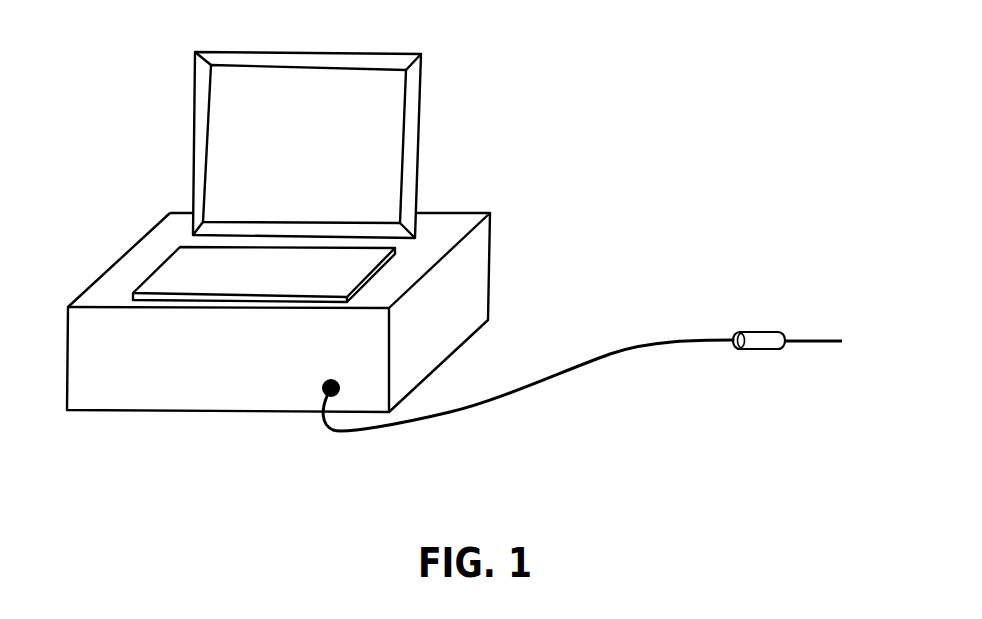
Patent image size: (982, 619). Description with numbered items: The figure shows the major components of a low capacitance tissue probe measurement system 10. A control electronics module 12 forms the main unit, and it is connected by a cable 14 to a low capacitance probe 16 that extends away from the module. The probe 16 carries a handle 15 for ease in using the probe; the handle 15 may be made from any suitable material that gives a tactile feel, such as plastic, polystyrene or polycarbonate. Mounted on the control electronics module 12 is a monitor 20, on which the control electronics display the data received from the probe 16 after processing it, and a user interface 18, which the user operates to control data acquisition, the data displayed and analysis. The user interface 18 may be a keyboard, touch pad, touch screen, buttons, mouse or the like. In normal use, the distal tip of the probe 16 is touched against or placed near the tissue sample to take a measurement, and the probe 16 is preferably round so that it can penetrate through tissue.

The low capacitance tissue probe measurement system 10 is at (738, 73).
The control electronics module 12 is at (248, 363).
The cable 14 is at (560, 375).
The handle 15 is at (760, 332).
The low capacitance probe 16 is at (812, 345).
The user interface 18 is at (278, 282).
The monitor 20 is at (319, 160).